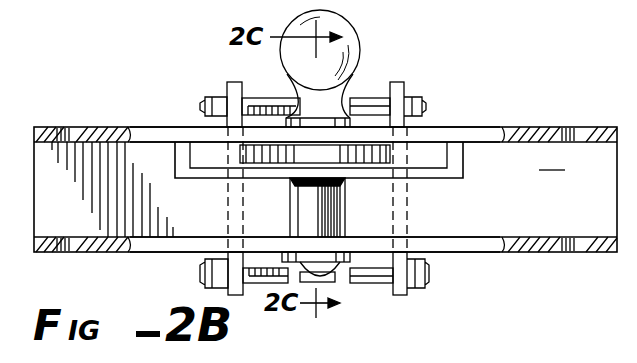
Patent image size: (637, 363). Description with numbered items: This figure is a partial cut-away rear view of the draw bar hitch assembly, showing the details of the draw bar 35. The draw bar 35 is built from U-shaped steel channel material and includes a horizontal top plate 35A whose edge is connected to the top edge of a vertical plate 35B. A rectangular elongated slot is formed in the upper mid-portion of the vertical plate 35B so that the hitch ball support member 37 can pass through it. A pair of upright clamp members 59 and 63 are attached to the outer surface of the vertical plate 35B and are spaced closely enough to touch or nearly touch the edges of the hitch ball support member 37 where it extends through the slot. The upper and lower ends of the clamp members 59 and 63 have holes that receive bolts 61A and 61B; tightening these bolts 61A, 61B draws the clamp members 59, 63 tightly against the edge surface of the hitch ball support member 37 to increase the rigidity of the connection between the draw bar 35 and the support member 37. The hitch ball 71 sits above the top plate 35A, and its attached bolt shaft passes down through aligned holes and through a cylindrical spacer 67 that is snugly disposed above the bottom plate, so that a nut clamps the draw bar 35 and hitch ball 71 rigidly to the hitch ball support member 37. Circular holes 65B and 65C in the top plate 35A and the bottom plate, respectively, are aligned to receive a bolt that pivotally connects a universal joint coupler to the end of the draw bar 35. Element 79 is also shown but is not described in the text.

The draw bar 35 is at (325, 189).
The horizontal top plate 35A is at (458, 127).
The vertical plate 35B is at (493, 252).
The circular hole 65B is at (578, 127).
The circular hole 65C is at (568, 237).
The upright clamp member 63 is at (230, 205).
The hitch ball support member 37 is at (370, 163).
The cylindrical spacer 67 is at (297, 215).
The upright clamp member 59 is at (405, 210).
The hitch ball 71 is at (342, 22).
The bolt 61A is at (368, 98).
The bolt 61B is at (382, 283).
The lower bearing member 79 is at (342, 264).